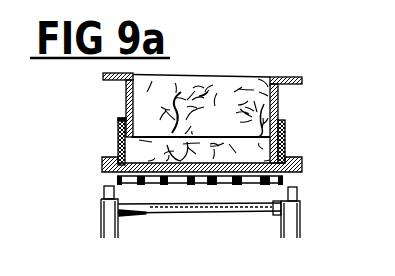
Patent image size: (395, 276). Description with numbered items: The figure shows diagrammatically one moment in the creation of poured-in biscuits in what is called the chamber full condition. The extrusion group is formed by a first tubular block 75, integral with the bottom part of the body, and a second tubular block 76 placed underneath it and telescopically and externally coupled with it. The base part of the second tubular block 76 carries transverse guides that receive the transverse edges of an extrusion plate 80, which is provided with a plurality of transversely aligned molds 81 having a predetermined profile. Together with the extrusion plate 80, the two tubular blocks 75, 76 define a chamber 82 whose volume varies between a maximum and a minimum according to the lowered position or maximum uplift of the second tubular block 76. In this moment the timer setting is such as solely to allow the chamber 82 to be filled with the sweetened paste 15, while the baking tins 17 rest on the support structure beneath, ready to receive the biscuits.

The sweetened paste 15 is at (238, 102).
The baking tins 17 is at (236, 205).
The first tubular block 75 is at (125, 92).
The second tubular block 76 is at (118, 122).
The extrusion plate 80 is at (105, 169).
The molds 81 is at (164, 187).
The chamber 82 is at (258, 153).